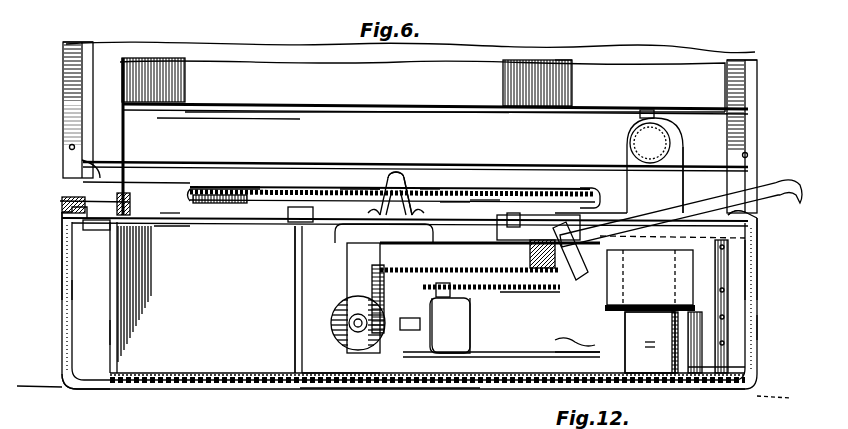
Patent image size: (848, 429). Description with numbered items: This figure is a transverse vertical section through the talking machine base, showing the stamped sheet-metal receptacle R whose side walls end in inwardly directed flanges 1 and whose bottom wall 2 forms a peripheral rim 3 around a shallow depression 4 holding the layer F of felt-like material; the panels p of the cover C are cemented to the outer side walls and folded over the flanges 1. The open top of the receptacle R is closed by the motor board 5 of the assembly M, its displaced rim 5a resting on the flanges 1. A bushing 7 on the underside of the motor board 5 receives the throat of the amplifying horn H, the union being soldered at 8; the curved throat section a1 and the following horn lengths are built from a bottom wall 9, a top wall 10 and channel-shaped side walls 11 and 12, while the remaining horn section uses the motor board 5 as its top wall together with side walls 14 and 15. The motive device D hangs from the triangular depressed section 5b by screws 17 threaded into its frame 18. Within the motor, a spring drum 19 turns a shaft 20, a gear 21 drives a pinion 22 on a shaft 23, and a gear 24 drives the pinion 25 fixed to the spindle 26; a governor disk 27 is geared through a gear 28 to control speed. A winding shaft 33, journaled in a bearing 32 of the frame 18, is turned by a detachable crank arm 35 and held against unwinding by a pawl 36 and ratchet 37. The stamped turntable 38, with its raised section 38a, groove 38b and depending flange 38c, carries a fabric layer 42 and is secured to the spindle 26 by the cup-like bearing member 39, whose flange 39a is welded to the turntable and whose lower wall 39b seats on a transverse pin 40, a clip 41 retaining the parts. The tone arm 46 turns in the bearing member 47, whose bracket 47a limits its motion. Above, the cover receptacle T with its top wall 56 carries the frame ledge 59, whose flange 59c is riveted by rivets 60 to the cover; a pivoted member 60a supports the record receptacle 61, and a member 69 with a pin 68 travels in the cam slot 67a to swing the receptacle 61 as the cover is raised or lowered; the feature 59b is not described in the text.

The cover C is at (62, 232).
The inwardly directed flanges 1 is at (77, 218).
The bottom wall 2 is at (457, 377).
The peripheral rim 3 is at (83, 390).
The shallow depression 4 is at (152, 390).
The transverse member 5 is at (167, 215).
The rim or flange 5a is at (97, 187).
The depressed central section 5b is at (483, 200).
The bushing or adapter 7 is at (757, 300).
The soldered union 8 is at (665, 252).
The bottom wall 9 is at (718, 390).
The top wall 10 is at (670, 300).
The side wall 11 is at (688, 367).
The side wall 12 is at (577, 363).
The side wall 14 is at (113, 280).
The side wall 15 is at (297, 277).
The screws 17 is at (480, 207).
The frame 18 is at (513, 300).
The housing or drum 19 is at (433, 392).
The shaft 20 is at (507, 273).
The gear 21 is at (450, 290).
The pinion 22 is at (450, 380).
The shaft 23 is at (443, 300).
The gear 24 is at (422, 280).
The pinion 25 is at (377, 267).
The shaft or spindle 26 is at (403, 187).
The disk 27 is at (333, 323).
The gear 28 is at (417, 330).
The bearing 32 is at (553, 297).
The shaft 33 is at (588, 247).
The crank arm 35 is at (765, 174).
The pawl 36 is at (562, 280).
The ratchet 37 is at (562, 213).
The turntable 38 is at (187, 190).
The circular raised section 38a is at (230, 187).
The circular groove 38b is at (205, 187).
The circular flange 38c is at (200, 223).
The cup-like bearing member 39 is at (358, 188).
The circular flange 39a is at (457, 200).
The lower wall 39b is at (377, 190).
The pin 40 is at (423, 200).
The clip 41 is at (393, 187).
The layer 42 is at (237, 187).
The tone arm or taper tube 46 is at (655, 123).
The bearing member 47 is at (615, 157).
The bracket or arm 47a is at (683, 157).
The top wall 56 is at (638, 65).
The ledge 59 is at (102, 108).
The side bar hole 59b is at (83, 143).
The flange 59c is at (70, 43).
The rivets 60 is at (748, 153).
The pivoted member 60a is at (123, 72).
The receptacle 61 is at (572, 78).
The cam slot 67a is at (148, 260).
The pin 68 is at (160, 227).
The member 69 is at (80, 125).
The curved section a1 is at (663, 342).
The motive device D is at (572, 343).
The layer of felt-like material F is at (337, 390).
The amplifying horn H is at (104, 343).
The assembly M is at (470, 360).
The receptacle R is at (73, 305).
The receptacle T is at (760, 65).
The panels p is at (104, 337).